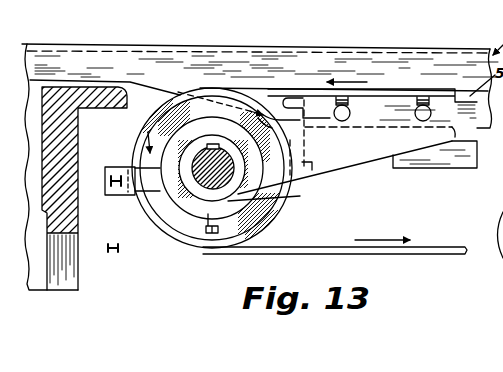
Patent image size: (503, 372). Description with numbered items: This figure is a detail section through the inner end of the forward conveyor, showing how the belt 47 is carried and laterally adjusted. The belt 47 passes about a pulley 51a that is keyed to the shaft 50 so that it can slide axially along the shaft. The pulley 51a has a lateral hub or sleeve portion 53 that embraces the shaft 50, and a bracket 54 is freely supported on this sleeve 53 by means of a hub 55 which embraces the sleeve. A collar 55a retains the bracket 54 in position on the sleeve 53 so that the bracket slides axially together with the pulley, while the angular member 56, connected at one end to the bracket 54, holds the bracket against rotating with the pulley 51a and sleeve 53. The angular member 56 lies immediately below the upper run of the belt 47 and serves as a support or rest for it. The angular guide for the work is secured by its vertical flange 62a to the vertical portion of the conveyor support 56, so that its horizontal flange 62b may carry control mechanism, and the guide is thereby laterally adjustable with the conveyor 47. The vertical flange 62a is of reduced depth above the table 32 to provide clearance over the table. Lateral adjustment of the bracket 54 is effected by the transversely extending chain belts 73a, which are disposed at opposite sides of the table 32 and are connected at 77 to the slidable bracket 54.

The table 32 is at (68, 143).
The belt 47 is at (407, 89).
The shaft 50 is at (290, 197).
The pulley 51a is at (180, 232).
The hub or sleeve portion 53 is at (271, 213).
The bracket 54 is at (347, 166).
The hub 55 is at (172, 201).
The collar 55a is at (205, 237).
The angular member 56 is at (415, 160).
The vertical flange 62a is at (457, 63).
The horizontal flange 62b is at (351, 48).
The chain belts 73a is at (108, 187).
The connection 77 is at (105, 172).